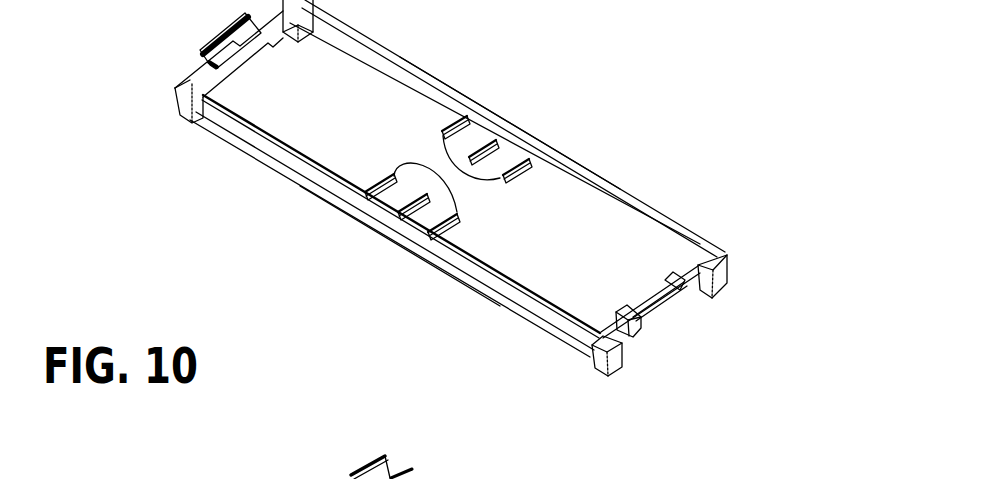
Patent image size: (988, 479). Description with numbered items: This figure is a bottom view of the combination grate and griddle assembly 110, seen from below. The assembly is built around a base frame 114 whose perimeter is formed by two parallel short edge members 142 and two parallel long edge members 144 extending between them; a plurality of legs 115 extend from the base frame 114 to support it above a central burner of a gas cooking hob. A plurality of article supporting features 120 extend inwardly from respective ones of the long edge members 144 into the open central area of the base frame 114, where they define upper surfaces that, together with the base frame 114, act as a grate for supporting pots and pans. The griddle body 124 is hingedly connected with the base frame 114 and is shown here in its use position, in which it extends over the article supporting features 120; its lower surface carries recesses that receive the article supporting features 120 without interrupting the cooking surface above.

The combination grate and griddle assembly 110 is at (545, 116).
The base frame 114 is at (648, 213).
The legs 115 is at (303, 42).
The article supporting features 120 is at (394, 175).
The griddle body 124 is at (340, 478).
The short edge members 142 is at (207, 80).
The long edge members 144 is at (412, 234).